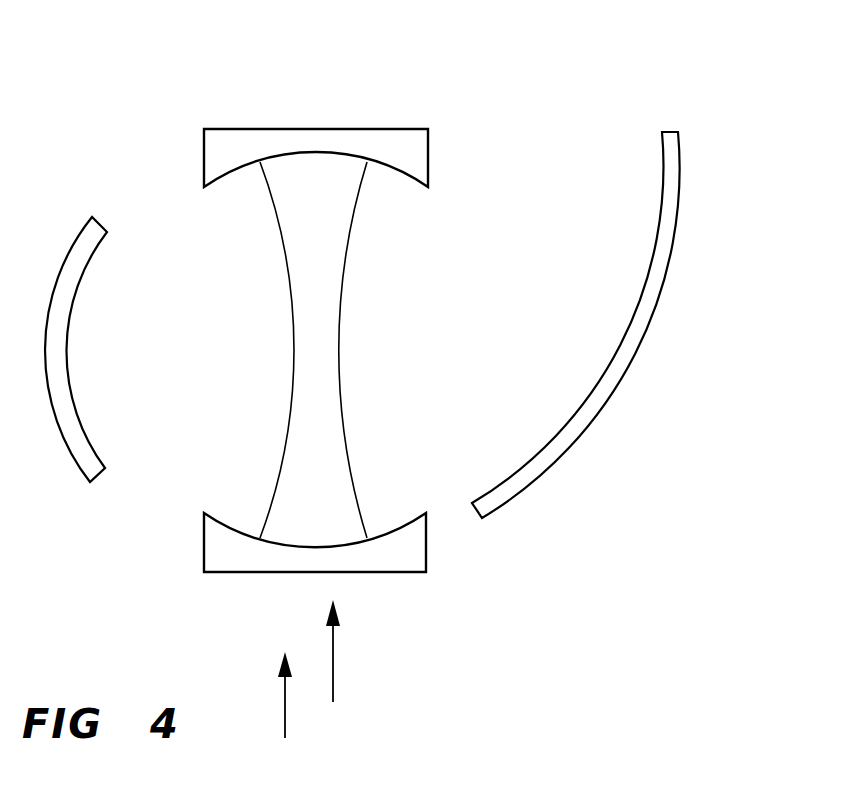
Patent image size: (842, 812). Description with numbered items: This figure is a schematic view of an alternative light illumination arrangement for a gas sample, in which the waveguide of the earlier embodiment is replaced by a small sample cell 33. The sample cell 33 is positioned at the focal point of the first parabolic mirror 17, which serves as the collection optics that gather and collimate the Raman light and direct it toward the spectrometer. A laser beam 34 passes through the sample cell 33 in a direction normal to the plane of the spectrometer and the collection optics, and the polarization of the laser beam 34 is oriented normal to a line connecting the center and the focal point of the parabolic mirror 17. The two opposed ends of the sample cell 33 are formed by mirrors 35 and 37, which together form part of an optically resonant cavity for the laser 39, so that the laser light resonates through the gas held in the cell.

The first parabolic mirror 17 is at (632, 327).
The sample cell 33 is at (505, 55).
The laser beam 34 is at (313, 341).
The mirror 35 is at (428, 153).
The mirror 37 is at (233, 560).
The laser 39 is at (192, 128).